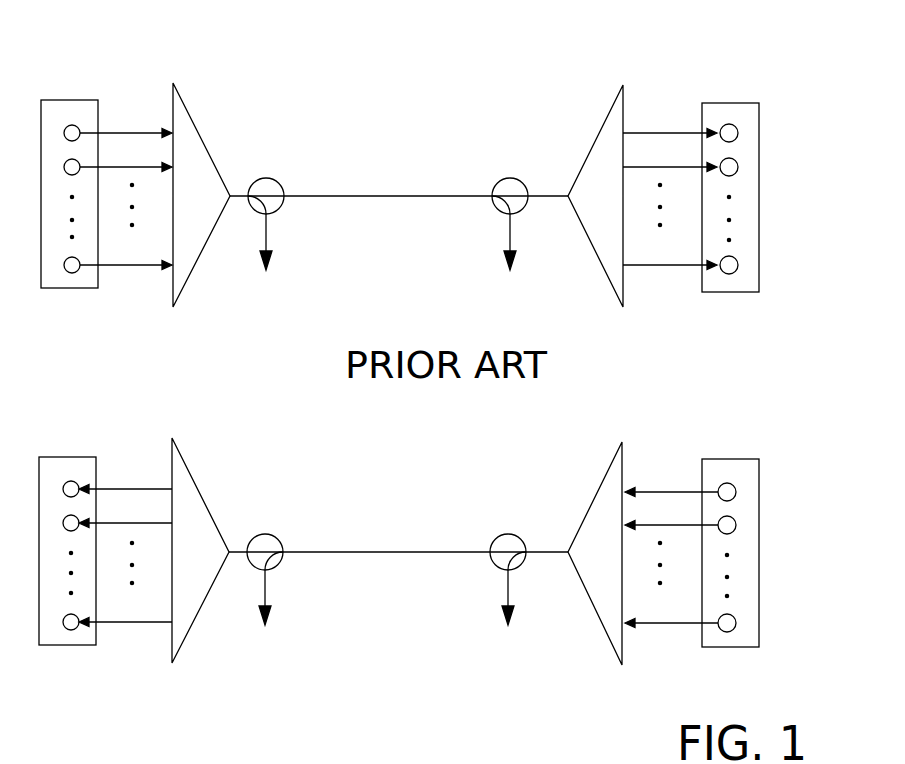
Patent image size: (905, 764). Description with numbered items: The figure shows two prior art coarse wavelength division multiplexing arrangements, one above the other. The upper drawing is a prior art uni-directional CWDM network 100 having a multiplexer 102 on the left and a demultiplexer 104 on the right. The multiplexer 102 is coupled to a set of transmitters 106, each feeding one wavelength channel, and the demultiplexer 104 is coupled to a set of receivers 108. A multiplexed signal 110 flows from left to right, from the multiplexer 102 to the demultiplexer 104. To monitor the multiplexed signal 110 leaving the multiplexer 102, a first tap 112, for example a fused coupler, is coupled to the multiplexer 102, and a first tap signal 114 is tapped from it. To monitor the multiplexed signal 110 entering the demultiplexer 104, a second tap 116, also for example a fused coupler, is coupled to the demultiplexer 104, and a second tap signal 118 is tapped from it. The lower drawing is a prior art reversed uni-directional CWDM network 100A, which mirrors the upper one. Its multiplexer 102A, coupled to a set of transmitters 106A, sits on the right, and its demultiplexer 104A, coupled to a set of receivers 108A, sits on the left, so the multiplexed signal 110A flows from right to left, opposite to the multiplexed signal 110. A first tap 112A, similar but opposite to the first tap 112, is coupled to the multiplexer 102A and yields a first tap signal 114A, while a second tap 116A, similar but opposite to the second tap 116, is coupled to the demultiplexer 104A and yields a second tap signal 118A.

The uni-directional CWDM network 100 is at (340, 58).
The multiplexer 102 is at (190, 110).
The demultiplexer 104 is at (627, 100).
The transmitters 106 is at (78, 100).
The receivers 108 is at (740, 103).
The multiplexed signal 110 is at (423, 159).
The first tap 112 is at (279, 208).
The first tap signal 114 is at (268, 236).
The second tap 116 is at (498, 208).
The second tap signal 118 is at (508, 236).
The reversed uni-directional CWDM network 100A is at (300, 412).
The multiplexer 102A is at (625, 460).
The demultiplexer 104A is at (190, 470).
The transmitters 106A is at (740, 459).
The receivers 108A is at (78, 457).
The multiplexed signal 110A is at (370, 515).
The first tap 112A is at (496, 563).
The first tap signal 114A is at (506, 592).
The second tap 116A is at (278, 563).
The second tap signal 118A is at (267, 592).